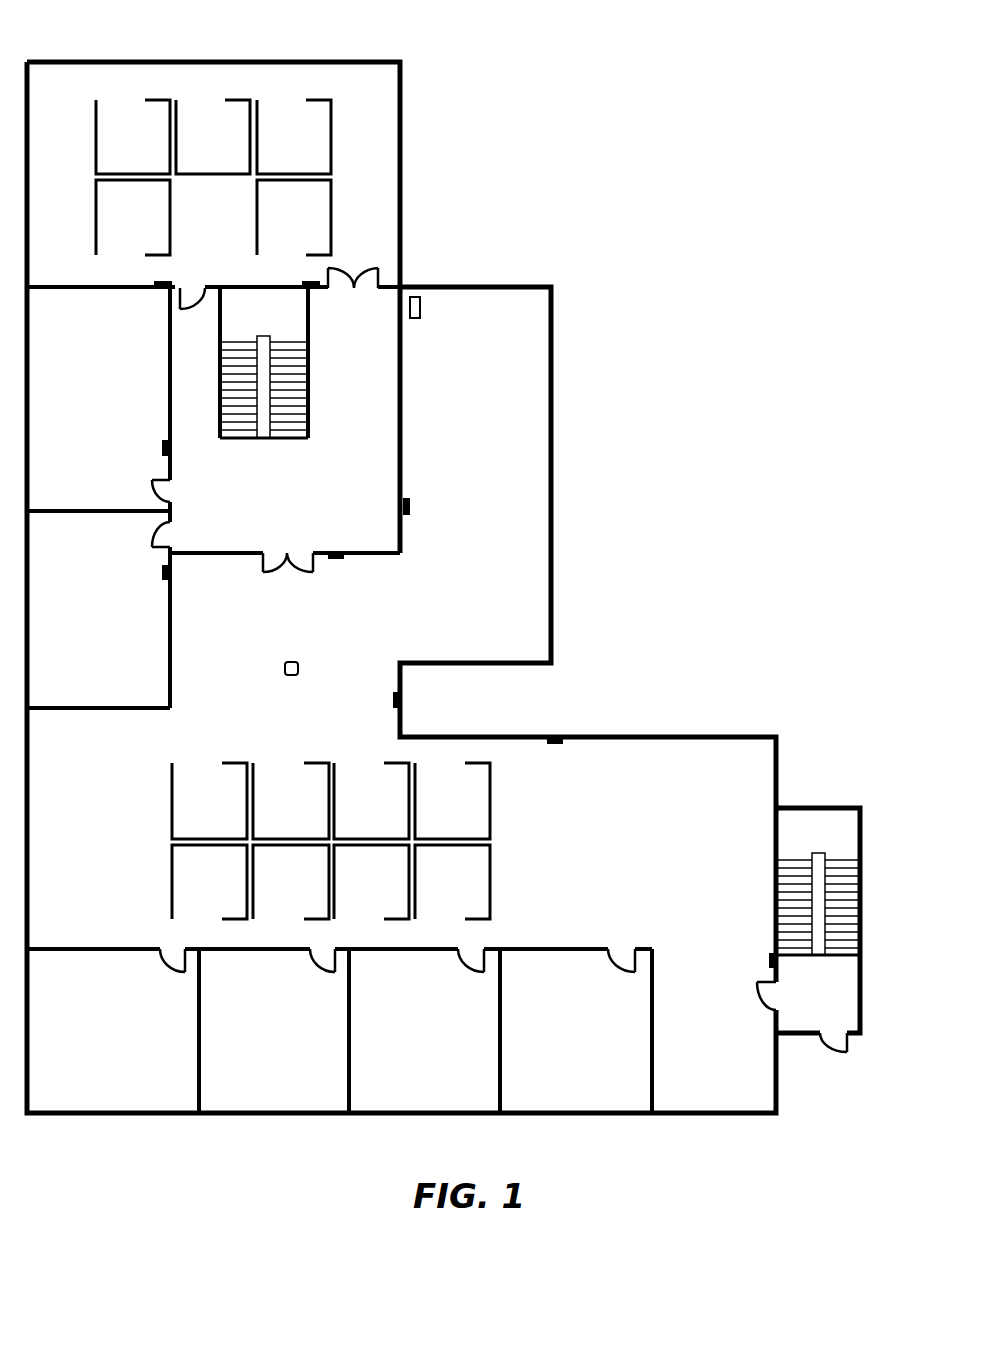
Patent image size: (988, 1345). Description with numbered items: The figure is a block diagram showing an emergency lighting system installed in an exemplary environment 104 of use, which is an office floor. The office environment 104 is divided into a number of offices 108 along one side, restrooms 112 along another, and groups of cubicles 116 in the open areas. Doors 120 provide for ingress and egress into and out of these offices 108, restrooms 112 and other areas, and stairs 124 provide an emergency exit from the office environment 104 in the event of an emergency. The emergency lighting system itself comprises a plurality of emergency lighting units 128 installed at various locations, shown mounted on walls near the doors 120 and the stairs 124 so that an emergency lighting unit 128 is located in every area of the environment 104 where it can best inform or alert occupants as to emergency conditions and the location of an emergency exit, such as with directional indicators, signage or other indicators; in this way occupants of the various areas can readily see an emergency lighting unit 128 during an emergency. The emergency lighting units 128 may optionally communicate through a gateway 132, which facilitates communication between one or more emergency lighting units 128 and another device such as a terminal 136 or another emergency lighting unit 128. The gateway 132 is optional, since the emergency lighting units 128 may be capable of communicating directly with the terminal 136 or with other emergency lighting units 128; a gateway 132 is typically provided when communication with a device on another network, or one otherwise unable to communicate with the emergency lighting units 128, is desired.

The environment 104 is at (345, 62).
The offices 108 is at (95, 1041).
The restrooms 112 is at (78, 384).
The cubicles 116 is at (471, 893).
The doors 120 is at (498, 653).
The stairs 124 is at (288, 440).
The emergency lighting units 128 is at (448, 607).
The gateway 132 is at (291, 661).
The terminal 136 is at (415, 296).